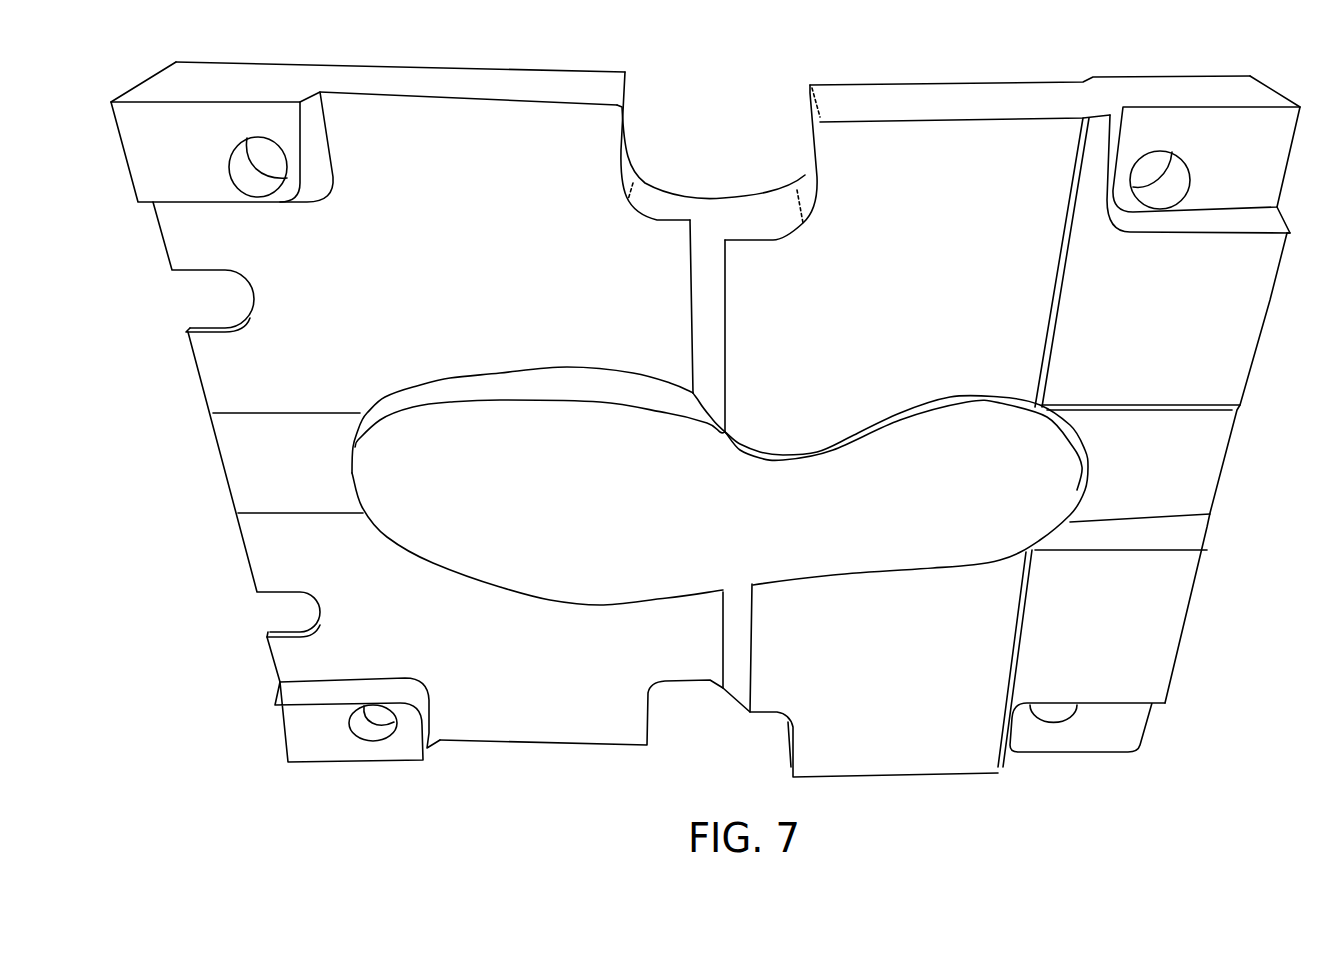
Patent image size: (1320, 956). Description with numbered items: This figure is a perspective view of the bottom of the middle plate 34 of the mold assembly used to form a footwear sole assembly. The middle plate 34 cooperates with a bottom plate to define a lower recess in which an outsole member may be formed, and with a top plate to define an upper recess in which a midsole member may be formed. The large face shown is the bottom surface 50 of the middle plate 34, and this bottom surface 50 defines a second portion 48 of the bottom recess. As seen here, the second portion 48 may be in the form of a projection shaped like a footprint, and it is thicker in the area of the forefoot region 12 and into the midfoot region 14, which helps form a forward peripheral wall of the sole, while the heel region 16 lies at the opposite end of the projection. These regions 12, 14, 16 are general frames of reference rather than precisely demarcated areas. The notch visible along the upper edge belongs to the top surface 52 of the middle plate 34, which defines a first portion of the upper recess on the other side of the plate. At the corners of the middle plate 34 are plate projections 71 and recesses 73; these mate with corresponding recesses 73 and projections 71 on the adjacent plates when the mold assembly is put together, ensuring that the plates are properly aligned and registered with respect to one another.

The forefoot region 12 is at (418, 510).
The midfoot region 14 is at (699, 515).
The heel region 16 is at (986, 501).
The middle plate 34 is at (1197, 603).
The second portion 48 is at (773, 460).
The bottom surface 50 is at (906, 706).
The top surface 52 is at (645, 182).
The plate projection 71 is at (171, 160).
The recess 73 is at (1221, 184).